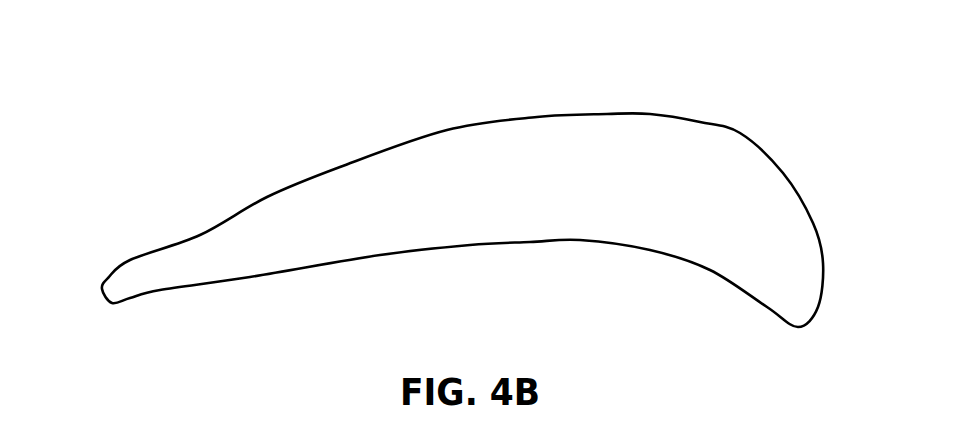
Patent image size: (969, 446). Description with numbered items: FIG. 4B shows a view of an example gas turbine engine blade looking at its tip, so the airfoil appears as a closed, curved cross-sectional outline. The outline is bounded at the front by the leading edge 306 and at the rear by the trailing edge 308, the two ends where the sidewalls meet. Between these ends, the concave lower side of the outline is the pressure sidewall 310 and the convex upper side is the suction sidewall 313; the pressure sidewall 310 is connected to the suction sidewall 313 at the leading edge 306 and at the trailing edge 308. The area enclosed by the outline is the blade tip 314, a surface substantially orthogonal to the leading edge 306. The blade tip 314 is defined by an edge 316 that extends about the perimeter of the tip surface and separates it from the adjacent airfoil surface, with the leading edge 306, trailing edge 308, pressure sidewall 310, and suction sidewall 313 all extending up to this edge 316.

The leading edge 306 is at (806, 149).
The trailing edge 308 is at (97, 270).
The pressure sidewall 310 is at (487, 265).
The suction sidewall 313 is at (362, 132).
The blade tip 314 is at (542, 200).
The edge 316 is at (535, 117).